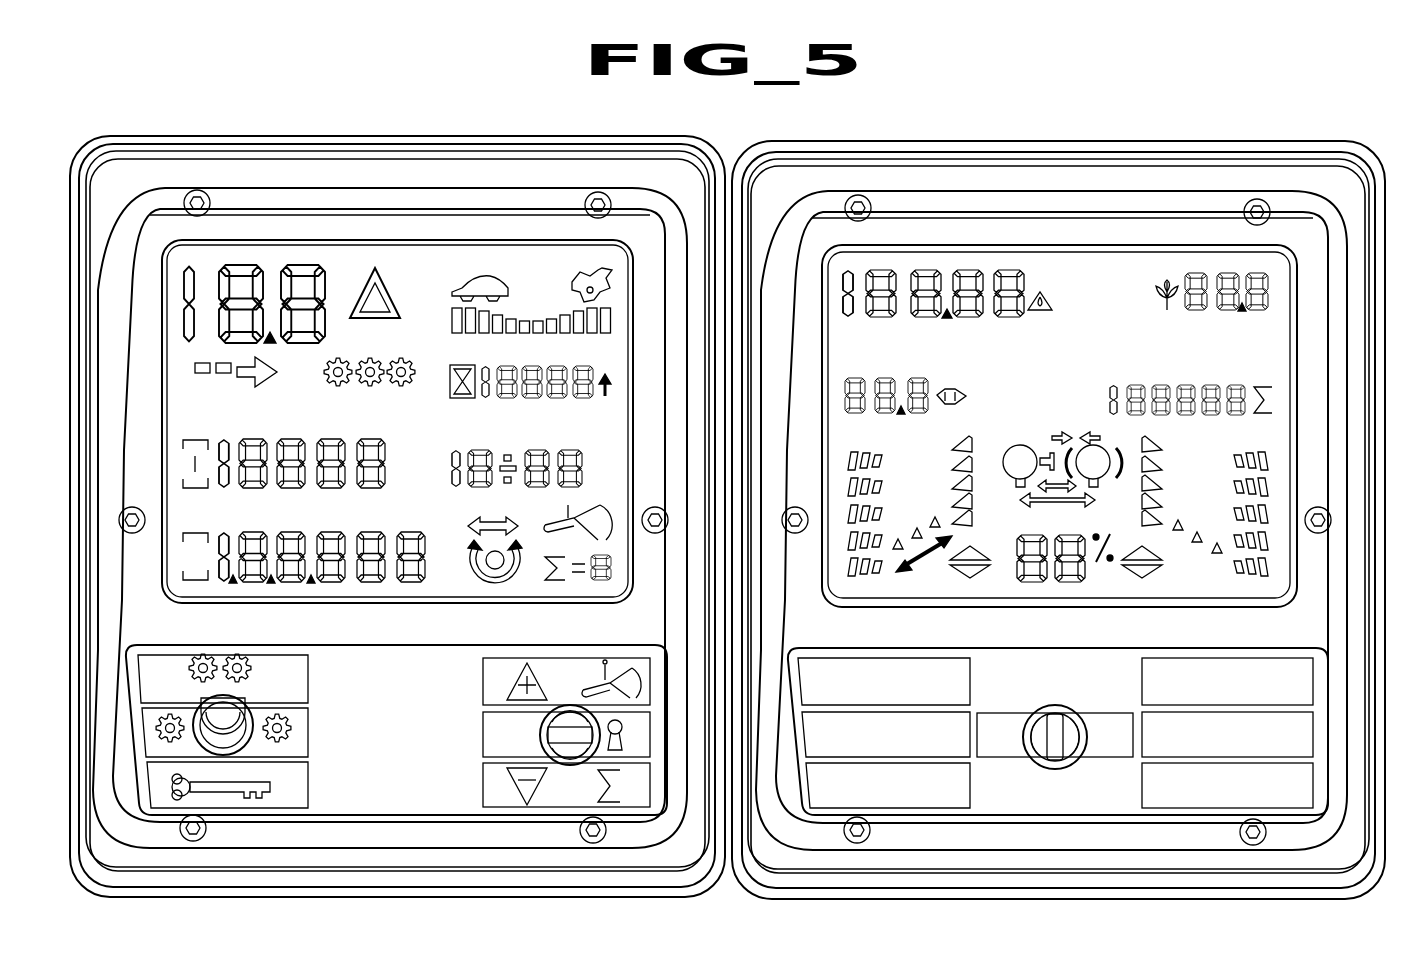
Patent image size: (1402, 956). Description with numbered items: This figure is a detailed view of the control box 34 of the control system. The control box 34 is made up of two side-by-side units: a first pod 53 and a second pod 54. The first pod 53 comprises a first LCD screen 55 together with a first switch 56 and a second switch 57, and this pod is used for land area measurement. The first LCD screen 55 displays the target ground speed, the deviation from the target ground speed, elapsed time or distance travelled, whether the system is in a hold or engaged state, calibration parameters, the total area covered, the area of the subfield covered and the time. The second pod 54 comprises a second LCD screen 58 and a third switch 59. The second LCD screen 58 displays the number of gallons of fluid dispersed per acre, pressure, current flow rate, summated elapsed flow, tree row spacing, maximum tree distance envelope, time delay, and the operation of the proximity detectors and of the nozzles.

The control box 34 is at (1166, 128).
The first pod 53 is at (472, 138).
The second pod 54 is at (1000, 141).
The first LCD screen 55 is at (400, 268).
The first switch 56 is at (250, 718).
The second switch 57 is at (548, 735).
The second LCD screen 58 is at (918, 262).
The third switch 59 is at (1072, 676).